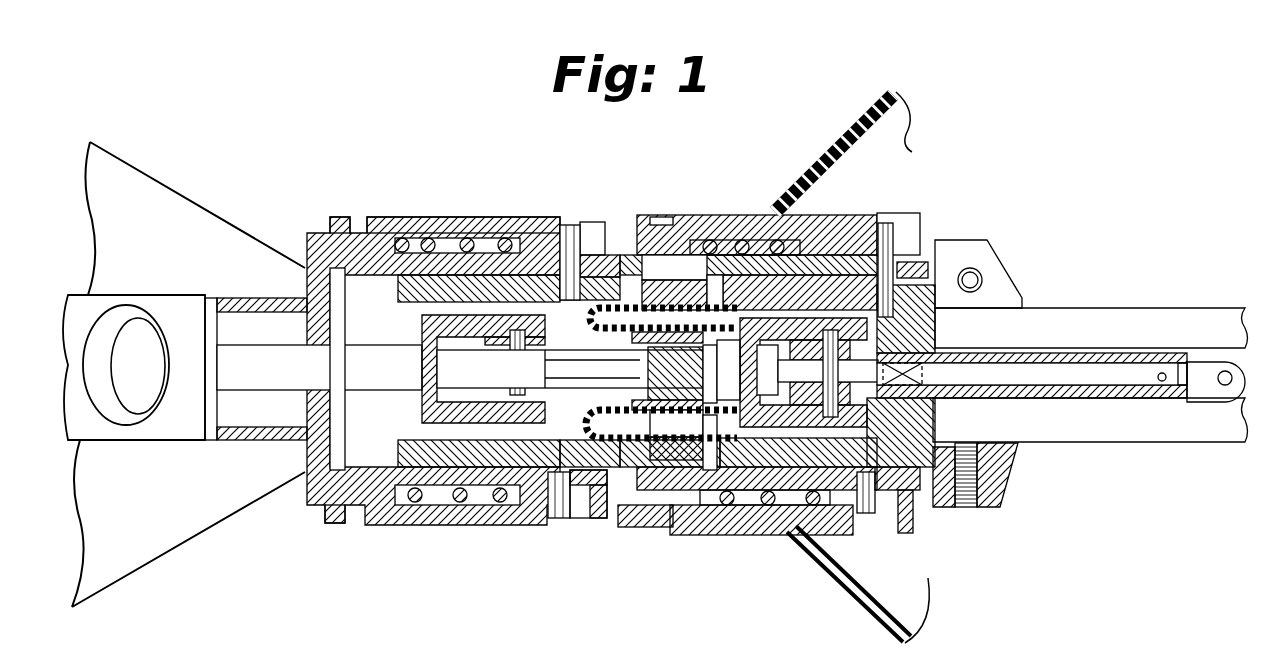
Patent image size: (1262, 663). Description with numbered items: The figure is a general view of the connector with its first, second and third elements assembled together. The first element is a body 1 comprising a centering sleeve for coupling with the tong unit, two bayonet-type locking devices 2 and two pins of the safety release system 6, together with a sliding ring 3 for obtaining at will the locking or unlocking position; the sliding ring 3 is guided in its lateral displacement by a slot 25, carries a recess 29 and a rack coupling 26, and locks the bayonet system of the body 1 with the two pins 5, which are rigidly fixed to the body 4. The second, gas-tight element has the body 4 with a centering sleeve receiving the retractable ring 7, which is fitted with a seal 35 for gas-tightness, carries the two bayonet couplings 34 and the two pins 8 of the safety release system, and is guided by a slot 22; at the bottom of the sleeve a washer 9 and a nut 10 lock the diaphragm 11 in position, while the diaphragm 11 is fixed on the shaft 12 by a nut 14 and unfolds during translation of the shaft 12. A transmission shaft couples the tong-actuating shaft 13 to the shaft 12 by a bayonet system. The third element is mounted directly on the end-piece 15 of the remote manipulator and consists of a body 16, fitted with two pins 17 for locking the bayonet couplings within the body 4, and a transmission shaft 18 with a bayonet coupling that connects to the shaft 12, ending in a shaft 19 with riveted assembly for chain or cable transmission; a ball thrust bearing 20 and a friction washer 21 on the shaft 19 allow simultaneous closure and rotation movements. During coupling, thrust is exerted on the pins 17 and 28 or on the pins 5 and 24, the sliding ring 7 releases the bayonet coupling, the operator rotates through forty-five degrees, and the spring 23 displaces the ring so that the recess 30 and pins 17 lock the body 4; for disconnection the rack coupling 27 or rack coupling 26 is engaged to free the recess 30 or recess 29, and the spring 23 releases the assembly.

The body 1 is at (305, 248).
The bayonet-type locking devices 2 is at (612, 240).
The sliding ring 3 is at (396, 230).
The body 4 is at (650, 522).
The pins 5 is at (569, 225).
The pins of the safety release system 6 is at (562, 505).
The retractable ring 7 is at (858, 215).
The pins of the safety release system 8 is at (867, 513).
The washer 9 is at (702, 262).
The nut 10 is at (781, 205).
The diaphragm 11 is at (618, 490).
The shaft 12 is at (583, 376).
The tong-actuating shaft 13 is at (242, 365).
The nut 14 is at (694, 371).
The end-piece 15 is at (1030, 320).
The body 16 is at (1000, 462).
The pins 17 is at (892, 235).
The transmission shaft 18 is at (1060, 358).
The shaft 19 is at (1205, 380).
The ball thrust bearing 20 is at (778, 535).
The friction washer 21 is at (1140, 388).
The slot 22 is at (892, 527).
The spring 23 is at (468, 238).
The pins 24 is at (486, 371).
The slot 25 is at (583, 512).
The rack coupling 26 is at (358, 217).
The rack coupling 27 is at (662, 218).
The pins 28 is at (893, 395).
The recess 29 is at (591, 235).
The recess 30 is at (905, 222).
The bayonet couplings 34 is at (915, 262).
The seal 35 is at (680, 290).